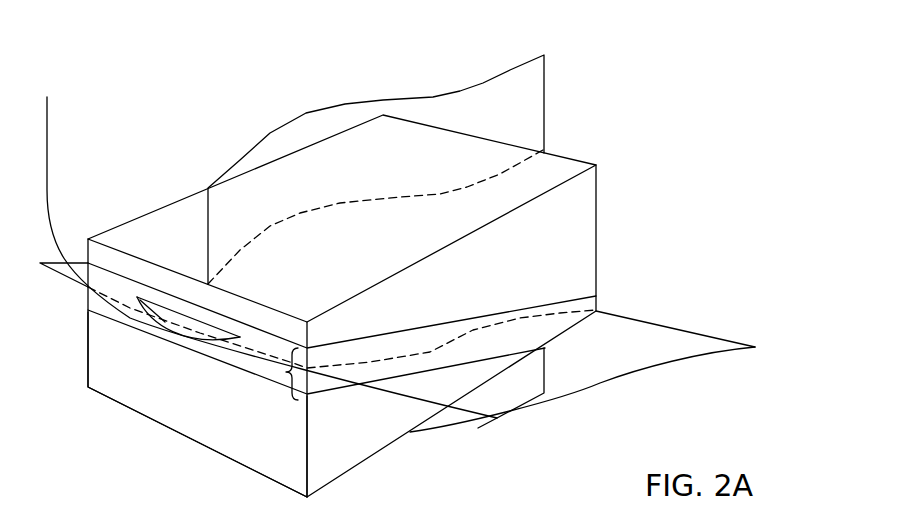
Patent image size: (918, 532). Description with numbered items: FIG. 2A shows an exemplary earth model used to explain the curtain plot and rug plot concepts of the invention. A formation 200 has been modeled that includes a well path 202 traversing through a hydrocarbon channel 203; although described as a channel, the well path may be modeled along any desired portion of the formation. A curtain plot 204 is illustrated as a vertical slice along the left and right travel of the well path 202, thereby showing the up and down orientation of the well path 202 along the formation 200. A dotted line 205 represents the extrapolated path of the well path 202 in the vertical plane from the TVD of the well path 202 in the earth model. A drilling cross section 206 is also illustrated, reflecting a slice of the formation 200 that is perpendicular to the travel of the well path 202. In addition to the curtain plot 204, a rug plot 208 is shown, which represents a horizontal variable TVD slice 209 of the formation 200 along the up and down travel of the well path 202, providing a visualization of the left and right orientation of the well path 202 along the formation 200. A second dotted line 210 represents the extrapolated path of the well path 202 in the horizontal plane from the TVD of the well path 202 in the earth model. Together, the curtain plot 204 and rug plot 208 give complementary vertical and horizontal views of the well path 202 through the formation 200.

The formation 200 is at (210, 100).
The well path 202 is at (48, 147).
The hydrocarbon channel 203 is at (173, 337).
The curtain plot 204 is at (546, 103).
The dotted line 205 is at (273, 232).
The drilling cross section 206 is at (163, 402).
The rug plot 208 is at (650, 362).
The horizontal variable TVD slice 209 is at (287, 373).
The dotted line 210 is at (472, 332).